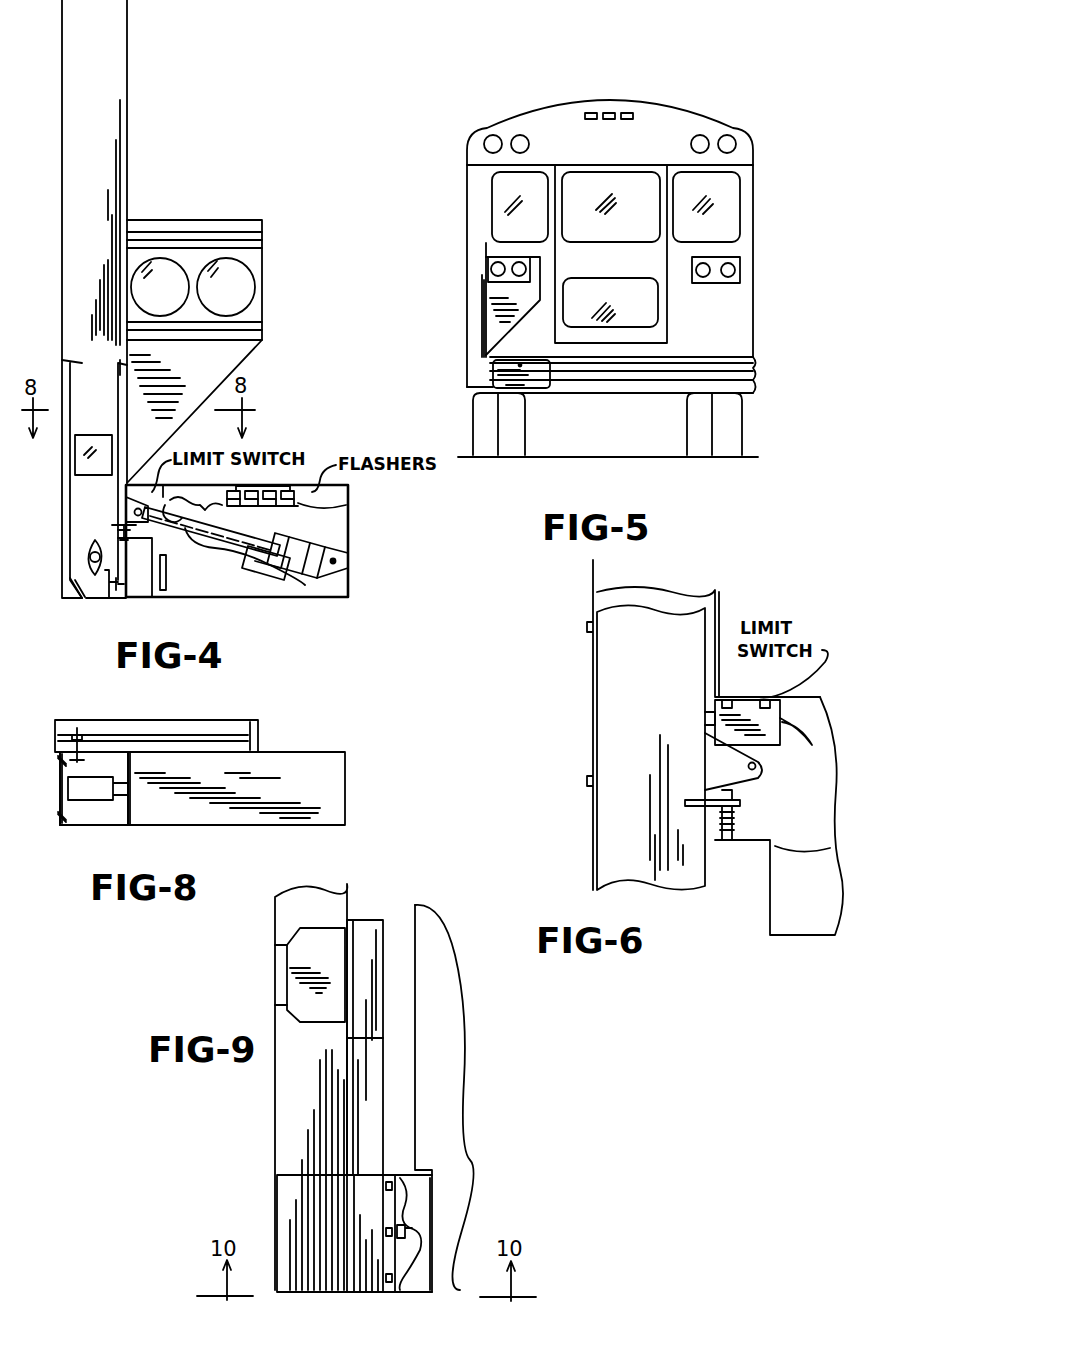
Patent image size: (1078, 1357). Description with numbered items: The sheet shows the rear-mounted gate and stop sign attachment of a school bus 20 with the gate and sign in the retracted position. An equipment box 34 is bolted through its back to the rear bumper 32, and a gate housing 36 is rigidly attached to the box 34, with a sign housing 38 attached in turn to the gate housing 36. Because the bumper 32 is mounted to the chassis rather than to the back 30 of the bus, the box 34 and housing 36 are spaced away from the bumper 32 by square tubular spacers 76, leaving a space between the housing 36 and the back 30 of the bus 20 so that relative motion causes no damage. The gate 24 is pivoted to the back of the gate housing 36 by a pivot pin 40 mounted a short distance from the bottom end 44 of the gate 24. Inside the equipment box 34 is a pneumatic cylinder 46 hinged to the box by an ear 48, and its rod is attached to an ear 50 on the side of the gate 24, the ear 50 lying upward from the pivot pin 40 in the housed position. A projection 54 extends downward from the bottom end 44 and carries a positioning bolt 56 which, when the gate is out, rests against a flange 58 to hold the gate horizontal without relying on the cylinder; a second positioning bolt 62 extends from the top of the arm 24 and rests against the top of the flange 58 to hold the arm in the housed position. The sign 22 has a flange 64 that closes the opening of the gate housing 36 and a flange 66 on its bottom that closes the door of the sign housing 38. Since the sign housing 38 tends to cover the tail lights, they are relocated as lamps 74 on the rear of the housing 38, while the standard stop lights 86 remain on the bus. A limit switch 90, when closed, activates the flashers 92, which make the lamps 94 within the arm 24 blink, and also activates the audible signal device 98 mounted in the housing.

In FIG. 5, the school bus 20 is at (770, 232).
In FIG. 8, the sign 22 is at (222, 738).
In FIG. 4, the gate 24 is at (70, 494).
In FIG. 8, the gate 24 is at (60, 784).
In FIG. 5, the back of the school bus 30 is at (620, 150).
In FIG. 9, the back of the school bus 30 is at (405, 920).
In FIG. 5, the bumper 32 is at (614, 388).
In FIG. 9, the bumper 32 is at (438, 1186).
In FIG. 4, the equipment box 34 is at (348, 515).
In FIG. 5, the equipment box 34 is at (544, 390).
In FIG. 8, the equipment box 34 is at (302, 788).
In FIG. 9, the equipment box 34 is at (296, 1204).
In FIG. 4, the gate housing 36 is at (128, 38).
In FIG. 5, the gate housing 36 is at (472, 288).
In FIG. 6, the gate housing 36 is at (720, 761).
In FIG. 9, the gate housing 36 is at (310, 1050).
In FIG. 4, the sign housing 38 is at (198, 370).
In FIG. 5, the sign housing 38 is at (545, 298).
In FIG. 9, the sign housing 38 is at (385, 1078).
In FIG. 4, the pivot pin 40 is at (80, 570).
In FIG. 4, the bottom end 44 is at (80, 598).
In FIG. 4, the pneumatic cylinder 46 is at (196, 545).
In FIG. 4, the ear 48 is at (342, 560).
In FIG. 4, the ear 50 is at (126, 513).
In FIG. 4, the projection 54 is at (100, 598).
In FIG. 4, the positioning bolt 56 is at (124, 588).
In FIG. 4, the flange 58 is at (150, 558).
In FIG. 4, the positioning bolt 62 is at (112, 530).
In FIG. 6, the positioning bolt 62 is at (736, 828).
In FIG. 4, the flange 64 is at (62, 287).
In FIG. 6, the flange 64 is at (590, 672).
In FIG. 8, the flange 64 is at (60, 806).
In FIG. 8, the flange 66 is at (55, 722).
In FIG. 4, the lamps 74 is at (234, 302).
In FIG. 5, the lamps 74 is at (497, 262).
In FIG. 9, the lamps 74 is at (330, 958).
In FIG. 9, the square tubular spacers 76 is at (380, 1206).
In FIG. 5, the stop lights 86 is at (493, 134).
In FIG. 4, the limit switch 90 is at (176, 500).
In FIG. 6, the limit switch 90 is at (776, 746).
In FIG. 4, the flashers 92 is at (346, 500).
In FIG. 4, the lamps 94 is at (97, 440).
In FIG. 4, the audible signal device 98 is at (178, 586).